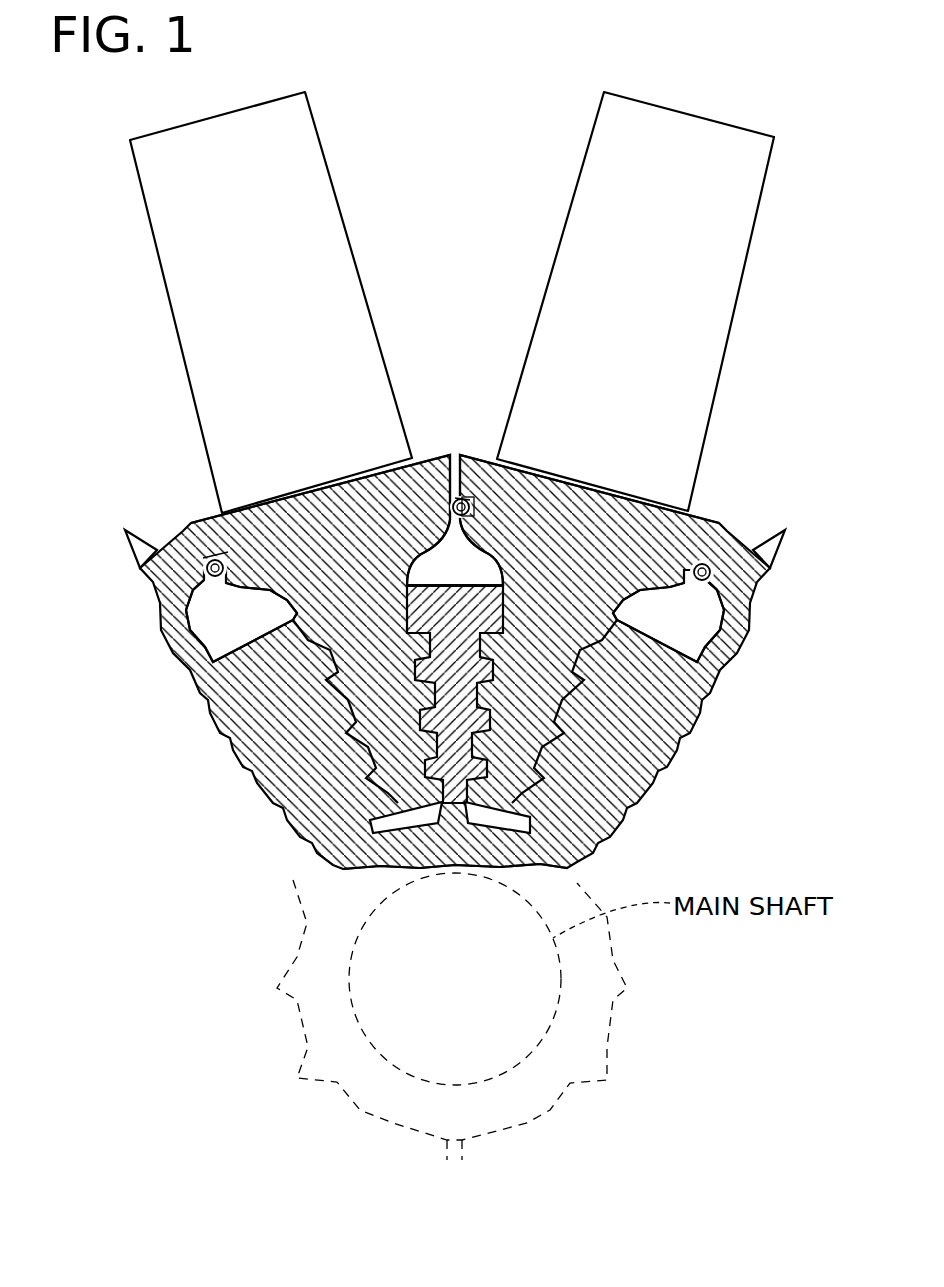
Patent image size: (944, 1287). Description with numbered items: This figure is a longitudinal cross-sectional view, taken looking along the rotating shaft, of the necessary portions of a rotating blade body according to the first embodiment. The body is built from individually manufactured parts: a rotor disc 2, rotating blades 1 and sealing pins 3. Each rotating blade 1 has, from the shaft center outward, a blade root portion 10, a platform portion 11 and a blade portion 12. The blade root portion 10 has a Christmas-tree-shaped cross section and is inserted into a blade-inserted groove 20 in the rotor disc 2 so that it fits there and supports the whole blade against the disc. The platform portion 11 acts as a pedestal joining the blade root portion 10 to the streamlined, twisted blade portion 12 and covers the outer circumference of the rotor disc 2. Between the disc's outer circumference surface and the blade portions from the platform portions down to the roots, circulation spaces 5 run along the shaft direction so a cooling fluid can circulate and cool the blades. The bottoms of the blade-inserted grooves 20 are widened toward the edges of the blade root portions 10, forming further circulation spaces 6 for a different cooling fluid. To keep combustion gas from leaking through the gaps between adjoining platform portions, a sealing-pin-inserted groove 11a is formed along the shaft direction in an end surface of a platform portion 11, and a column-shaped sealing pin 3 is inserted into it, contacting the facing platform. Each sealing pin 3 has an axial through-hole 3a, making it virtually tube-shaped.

The rotating blade 1 is at (350, 142).
The rotor disc 2 is at (237, 657).
The sealing pin 3 is at (228, 575).
The through-hole 3a is at (222, 566).
The circulation space 5 is at (227, 627).
The circulation space 6 is at (415, 820).
The blade root portion 10 is at (392, 780).
The platform portion 11 is at (375, 490).
The sealing-pin-inserted groove 11a is at (212, 557).
The blade portion 12 is at (340, 290).
The blade-inserted groove 20 is at (362, 780).